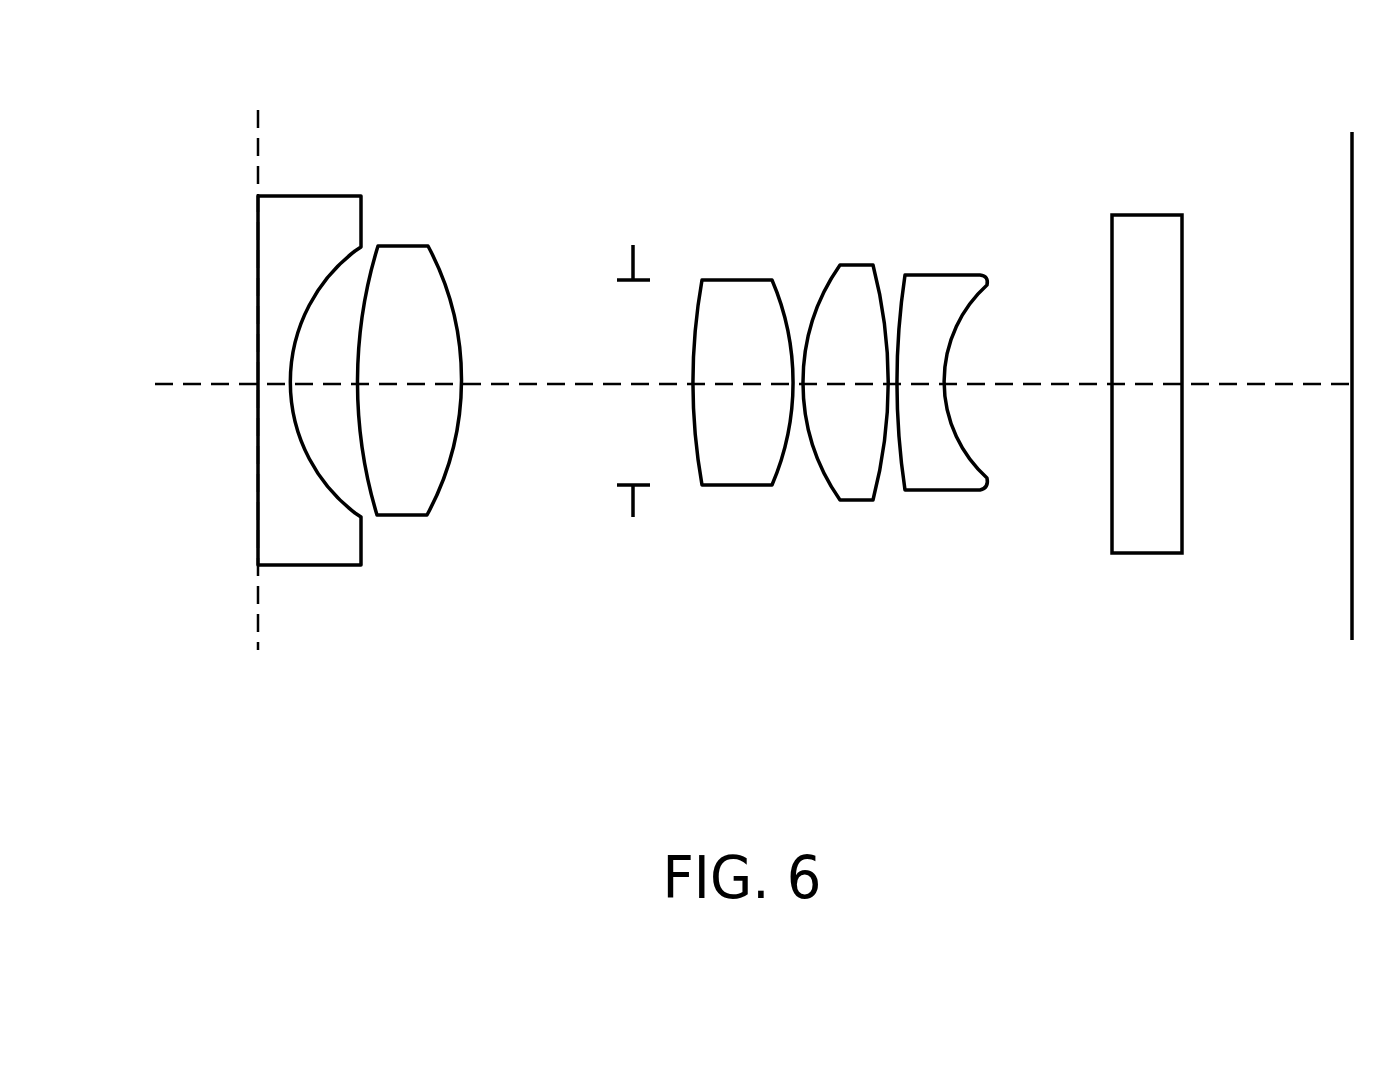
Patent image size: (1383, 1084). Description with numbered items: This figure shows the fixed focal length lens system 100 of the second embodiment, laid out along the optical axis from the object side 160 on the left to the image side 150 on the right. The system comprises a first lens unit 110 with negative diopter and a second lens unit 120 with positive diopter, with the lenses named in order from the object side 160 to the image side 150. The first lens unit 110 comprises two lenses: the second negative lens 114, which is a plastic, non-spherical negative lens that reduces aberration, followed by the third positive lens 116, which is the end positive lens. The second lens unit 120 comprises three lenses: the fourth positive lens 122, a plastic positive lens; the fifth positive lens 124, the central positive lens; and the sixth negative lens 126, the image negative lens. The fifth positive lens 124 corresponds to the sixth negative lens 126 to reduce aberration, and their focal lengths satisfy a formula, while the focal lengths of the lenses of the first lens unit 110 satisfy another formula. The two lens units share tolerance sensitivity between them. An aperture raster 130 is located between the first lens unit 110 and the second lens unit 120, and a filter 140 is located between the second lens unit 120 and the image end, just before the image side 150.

The fixed focal length lens system 100 is at (1345, 29).
The first lens unit 110 is at (360, 504).
The second negative lens 114 is at (308, 548).
The third positive lens 116 is at (395, 498).
The second lens unit 120 is at (840, 540).
The fourth positive lens 122 is at (737, 470).
The fifth positive lens 124 is at (857, 480).
The sixth negative lens 126 is at (942, 472).
The aperture raster 130 is at (633, 517).
The filter 140 is at (1148, 528).
The image side 150 is at (1352, 607).
The object side 160 is at (258, 228).